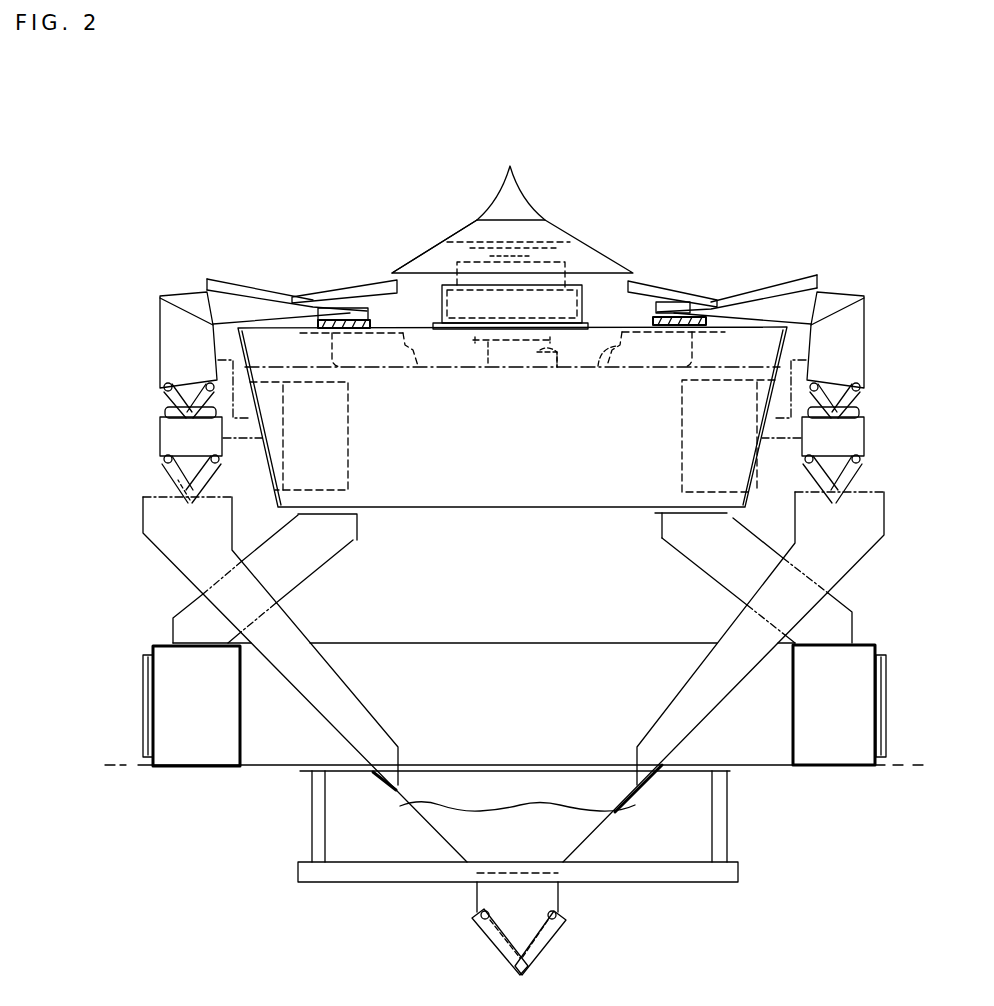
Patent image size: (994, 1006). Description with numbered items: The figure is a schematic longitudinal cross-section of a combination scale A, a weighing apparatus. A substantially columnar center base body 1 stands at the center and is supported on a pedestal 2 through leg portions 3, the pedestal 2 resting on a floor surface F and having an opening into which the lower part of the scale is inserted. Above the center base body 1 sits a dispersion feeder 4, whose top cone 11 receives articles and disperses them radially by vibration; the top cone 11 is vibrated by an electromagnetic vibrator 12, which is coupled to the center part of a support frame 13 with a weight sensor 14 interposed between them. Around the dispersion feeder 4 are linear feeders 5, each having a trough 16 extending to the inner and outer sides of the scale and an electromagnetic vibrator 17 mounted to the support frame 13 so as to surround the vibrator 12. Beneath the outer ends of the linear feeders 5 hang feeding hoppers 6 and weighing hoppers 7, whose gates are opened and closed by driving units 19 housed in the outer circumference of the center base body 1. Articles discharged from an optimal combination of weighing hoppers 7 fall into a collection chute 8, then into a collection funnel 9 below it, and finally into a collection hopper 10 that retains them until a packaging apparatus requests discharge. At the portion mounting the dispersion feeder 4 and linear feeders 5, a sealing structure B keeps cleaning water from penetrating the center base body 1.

The center base body 1 is at (470, 506).
The pedestal 2 is at (865, 643).
The leg portions 3 is at (310, 566).
The dispersion feeder 4 is at (556, 226).
The linear feeders 5 is at (247, 284).
The feeding hoppers 6 is at (160, 339).
The weighing hoppers 7 is at (160, 437).
The collection chute 8 is at (176, 569).
The collection funnel 9 is at (436, 831).
The collection hopper 10 is at (477, 901).
The top cone 11 is at (461, 230).
The electromagnetic vibrator 12 is at (581, 281).
The support frame 13 is at (450, 367).
The weight sensor 14 is at (555, 370).
The trough 16 is at (353, 291).
The electromagnetic vibrator 17 is at (413, 367).
The driving units 19 is at (357, 461).
The combination scale A is at (343, 212).
The sealing structure B is at (374, 321).
The floor surface F is at (917, 765).